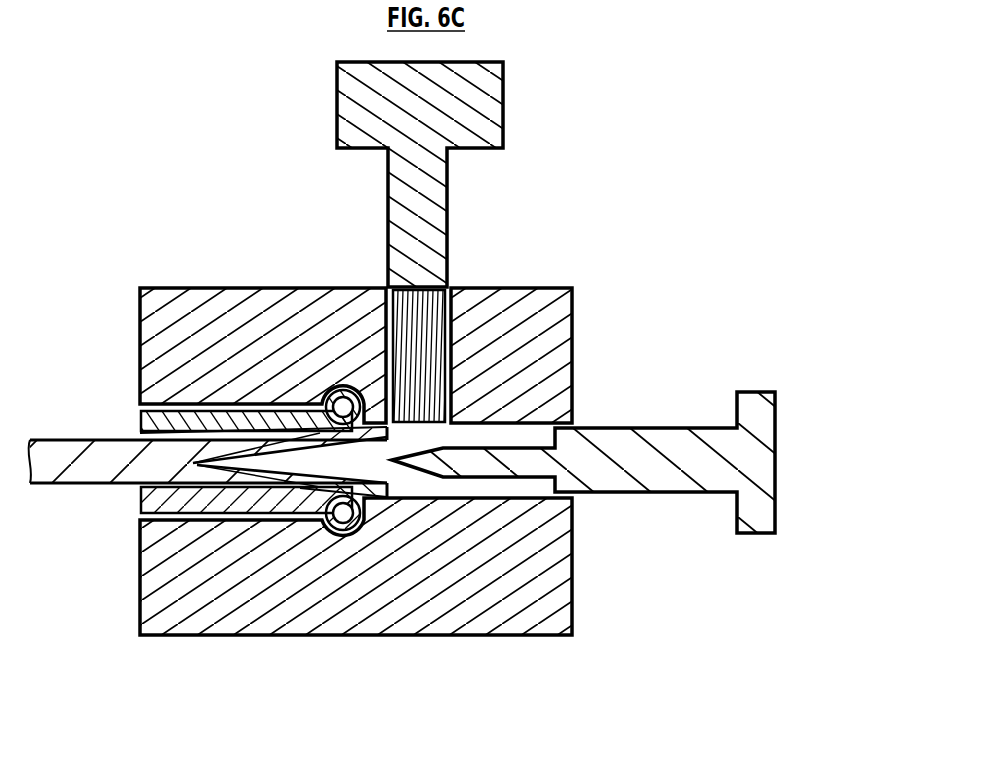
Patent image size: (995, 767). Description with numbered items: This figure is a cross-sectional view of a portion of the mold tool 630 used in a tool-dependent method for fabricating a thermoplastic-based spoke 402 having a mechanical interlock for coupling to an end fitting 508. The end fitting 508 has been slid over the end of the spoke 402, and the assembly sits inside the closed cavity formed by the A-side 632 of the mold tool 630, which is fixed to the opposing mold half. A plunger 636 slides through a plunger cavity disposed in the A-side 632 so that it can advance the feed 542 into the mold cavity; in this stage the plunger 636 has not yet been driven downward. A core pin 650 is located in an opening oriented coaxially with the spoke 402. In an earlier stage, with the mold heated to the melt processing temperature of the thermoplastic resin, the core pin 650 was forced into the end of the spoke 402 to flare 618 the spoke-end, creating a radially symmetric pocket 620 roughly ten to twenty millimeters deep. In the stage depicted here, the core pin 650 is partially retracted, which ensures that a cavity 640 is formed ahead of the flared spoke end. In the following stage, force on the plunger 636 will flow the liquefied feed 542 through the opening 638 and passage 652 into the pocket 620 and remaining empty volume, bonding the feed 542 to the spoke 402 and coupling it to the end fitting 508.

The spoke 402 is at (110, 437).
The end fitting 508 is at (140, 408).
The feed 542 is at (447, 288).
The flare 618 is at (383, 497).
The pocket 620 is at (140, 489).
The mold tool 630 is at (608, 312).
The A-side 632 is at (228, 289).
The plunger 636 is at (503, 107).
The opening 638 is at (374, 262).
The cavity 640 is at (462, 435).
The core pin 650 is at (752, 392).
The channel 652 is at (538, 489).